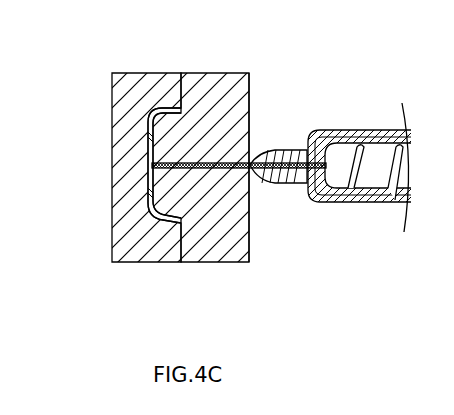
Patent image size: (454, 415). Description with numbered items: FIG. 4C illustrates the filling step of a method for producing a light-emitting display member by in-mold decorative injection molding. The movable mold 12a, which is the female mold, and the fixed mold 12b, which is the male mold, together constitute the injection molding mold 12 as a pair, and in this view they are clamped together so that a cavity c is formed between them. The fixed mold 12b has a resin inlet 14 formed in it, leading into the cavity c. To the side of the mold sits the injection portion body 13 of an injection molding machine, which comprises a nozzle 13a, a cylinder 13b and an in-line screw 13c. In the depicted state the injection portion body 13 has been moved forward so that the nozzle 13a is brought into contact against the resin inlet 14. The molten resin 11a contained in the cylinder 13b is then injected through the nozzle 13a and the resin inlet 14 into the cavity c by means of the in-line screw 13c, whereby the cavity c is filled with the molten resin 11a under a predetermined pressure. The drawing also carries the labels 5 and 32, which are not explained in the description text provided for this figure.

The cavity c is at (180, 100).
The housing 5 is at (337, 129).
The molten resin 11a is at (252, 150).
The injection molding mold 12 is at (203, 186).
The movable mold 12a is at (118, 263).
The fixed mold 12b is at (223, 263).
The injection portion body 13 is at (326, 145).
The nozzle 13a is at (280, 184).
The cylinder 13b is at (337, 201).
The in-line screw 13c is at (392, 199).
The resin inlet 14 is at (262, 161).
The support block 32 is at (121, 188).